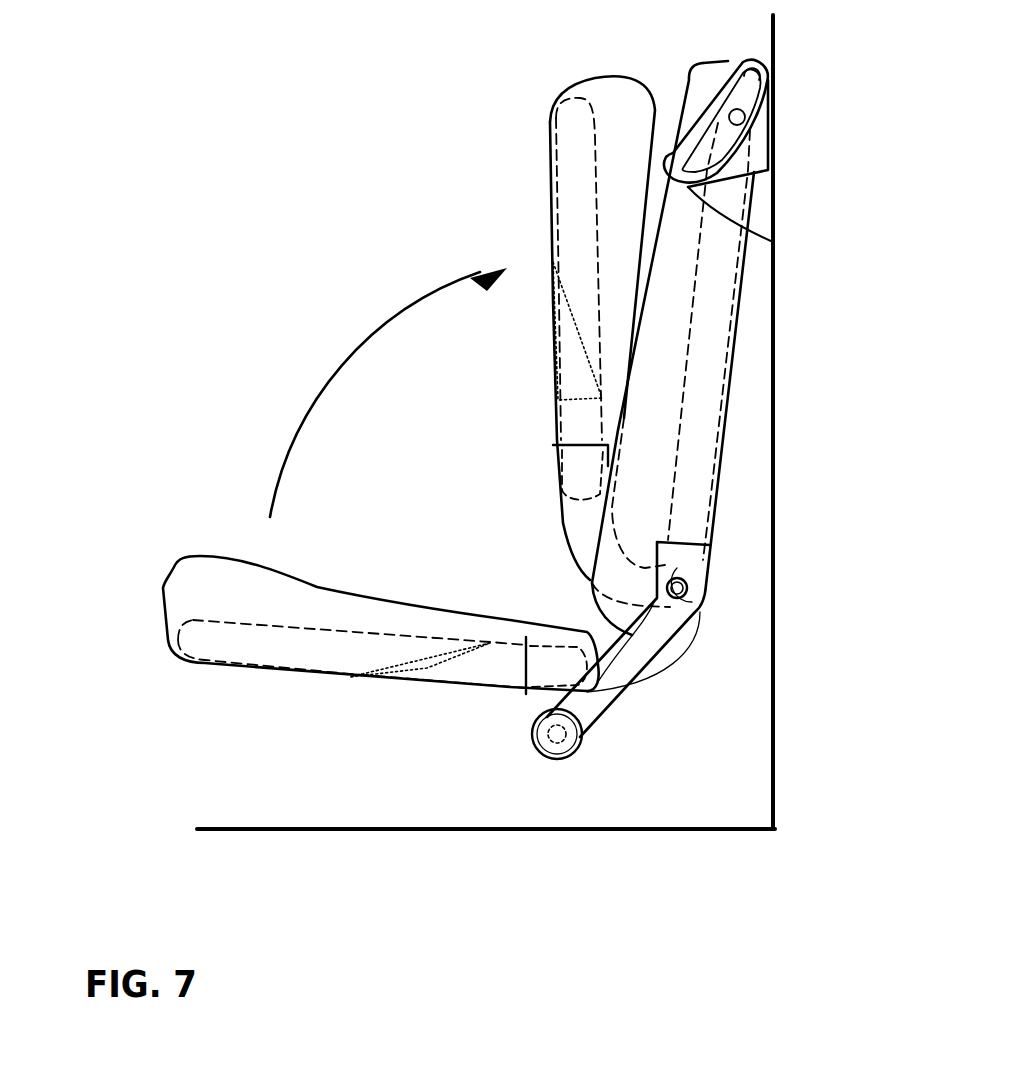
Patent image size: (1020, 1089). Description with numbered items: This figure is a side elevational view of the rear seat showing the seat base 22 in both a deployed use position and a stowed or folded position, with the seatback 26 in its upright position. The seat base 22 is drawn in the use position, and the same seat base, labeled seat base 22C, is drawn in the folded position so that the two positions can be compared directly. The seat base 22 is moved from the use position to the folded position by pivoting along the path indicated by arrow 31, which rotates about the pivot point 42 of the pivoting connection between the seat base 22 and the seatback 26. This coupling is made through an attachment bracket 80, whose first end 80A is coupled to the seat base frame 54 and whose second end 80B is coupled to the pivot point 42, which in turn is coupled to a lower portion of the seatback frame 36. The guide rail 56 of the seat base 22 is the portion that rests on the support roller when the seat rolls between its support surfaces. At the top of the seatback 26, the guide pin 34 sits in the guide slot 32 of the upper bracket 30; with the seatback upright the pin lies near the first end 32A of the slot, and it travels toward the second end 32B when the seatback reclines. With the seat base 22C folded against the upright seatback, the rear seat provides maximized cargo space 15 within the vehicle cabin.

The cargo space 15 is at (353, 280).
The seat base 22 is at (178, 560).
The seat base (folded position) 22C is at (552, 108).
The seatback 26 is at (745, 389).
The upper bracket 30 is at (763, 195).
The arrow 31 is at (323, 393).
The guide slot 32 is at (717, 138).
The first end of guide slot 32A is at (749, 76).
The second end of guide slot 32B is at (700, 208).
The guide pin 34 is at (745, 117).
The seatback frame 36 is at (700, 443).
The pivot point 42 is at (683, 588).
The seat base frame 54 is at (573, 150).
The guide rail 56 is at (578, 369).
The attachment bracket 80 is at (586, 575).
The first end of attachment bracket 80A is at (556, 468).
The second end of attachment bracket 80B is at (682, 618).